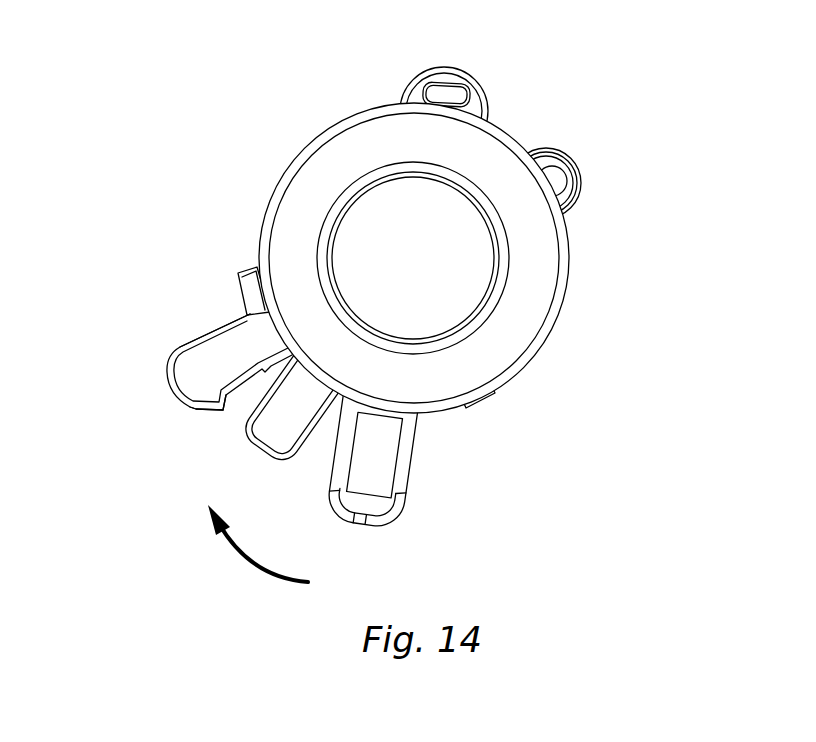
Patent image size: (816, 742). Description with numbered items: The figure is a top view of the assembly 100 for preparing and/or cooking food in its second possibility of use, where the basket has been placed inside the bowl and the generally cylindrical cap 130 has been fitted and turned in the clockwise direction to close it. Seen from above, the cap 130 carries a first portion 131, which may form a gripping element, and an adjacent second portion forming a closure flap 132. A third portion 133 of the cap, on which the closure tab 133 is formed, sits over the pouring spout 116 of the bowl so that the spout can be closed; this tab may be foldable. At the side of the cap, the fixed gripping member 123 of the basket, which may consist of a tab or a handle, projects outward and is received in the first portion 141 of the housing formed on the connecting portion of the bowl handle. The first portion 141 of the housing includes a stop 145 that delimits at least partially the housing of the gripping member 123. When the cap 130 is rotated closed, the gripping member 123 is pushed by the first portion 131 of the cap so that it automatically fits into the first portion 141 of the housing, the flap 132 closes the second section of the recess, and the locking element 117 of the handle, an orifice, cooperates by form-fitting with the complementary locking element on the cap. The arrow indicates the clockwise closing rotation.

The assembly 100 is at (172, 532).
The pouring spout 116 is at (572, 172).
The locking element 117 is at (222, 406).
The gripping member 123 is at (268, 437).
The cap 130 is at (523, 293).
The first portion 131 is at (373, 473).
The closure flap 132 is at (473, 402).
The closure tab 133 is at (475, 98).
The first portion of the housing 141 is at (203, 368).
The stop 145 is at (203, 332).